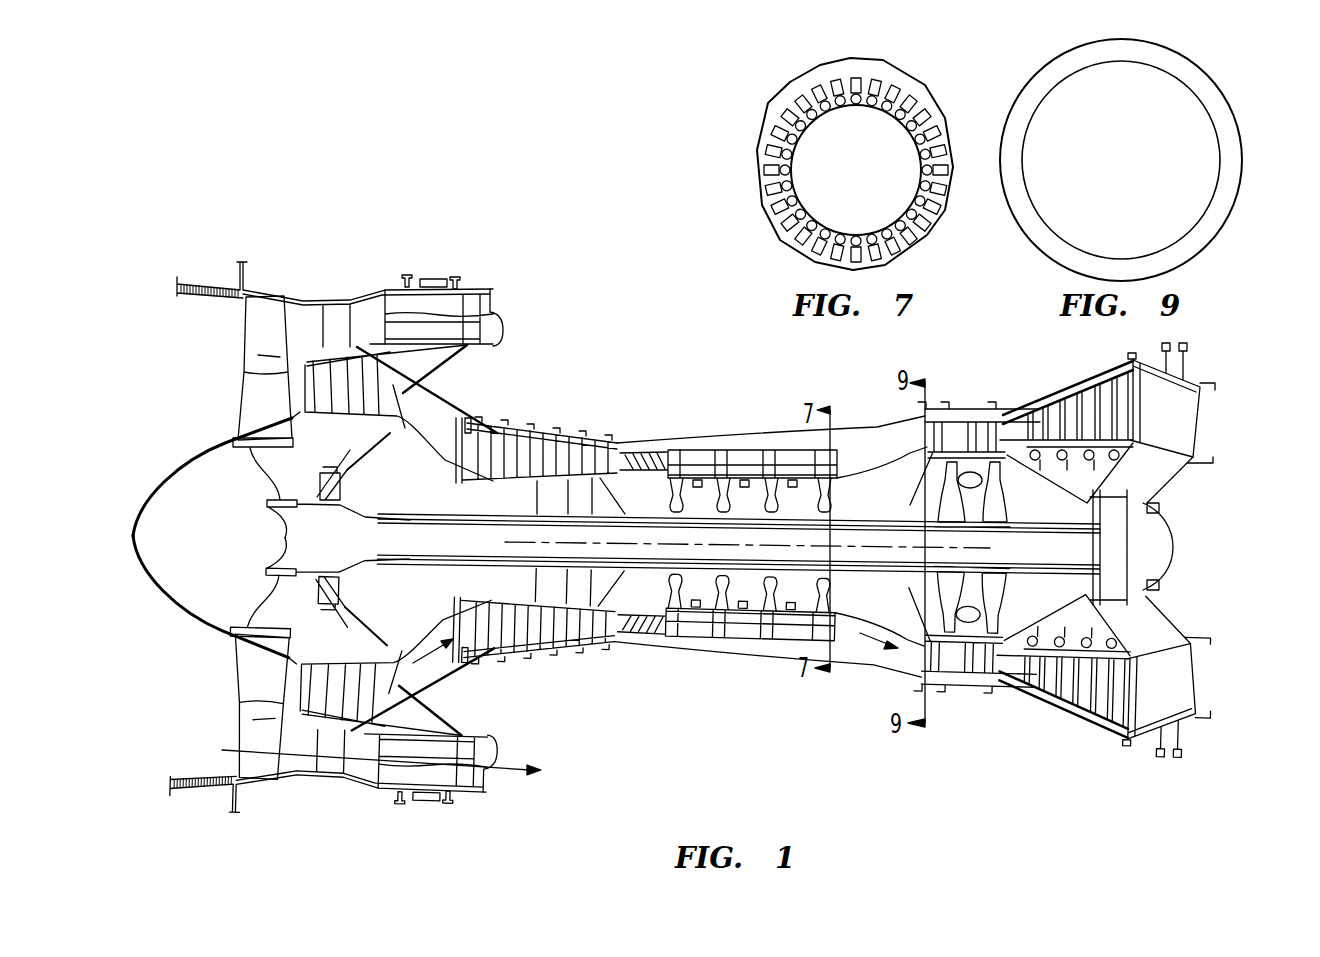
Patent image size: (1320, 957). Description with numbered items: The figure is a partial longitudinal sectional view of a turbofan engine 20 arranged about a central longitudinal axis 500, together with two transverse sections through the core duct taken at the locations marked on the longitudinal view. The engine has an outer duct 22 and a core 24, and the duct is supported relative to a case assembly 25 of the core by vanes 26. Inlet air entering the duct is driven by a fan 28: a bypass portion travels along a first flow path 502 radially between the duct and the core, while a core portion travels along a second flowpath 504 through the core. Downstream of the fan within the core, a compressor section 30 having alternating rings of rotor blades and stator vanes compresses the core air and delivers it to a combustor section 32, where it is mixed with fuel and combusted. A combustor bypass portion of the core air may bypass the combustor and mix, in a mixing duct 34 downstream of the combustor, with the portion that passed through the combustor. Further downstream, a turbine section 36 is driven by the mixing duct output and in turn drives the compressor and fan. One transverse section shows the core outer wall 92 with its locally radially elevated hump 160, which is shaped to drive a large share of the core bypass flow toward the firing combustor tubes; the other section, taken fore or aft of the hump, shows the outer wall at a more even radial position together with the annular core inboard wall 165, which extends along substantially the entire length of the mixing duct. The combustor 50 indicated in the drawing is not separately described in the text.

In FIG. 1, the turbofan engine 20 is at (580, 276).
In FIG. 1, the duct 22 is at (305, 293).
In FIG. 1, the core 24 is at (488, 394).
In FIG. 1, the case assembly 25 is at (467, 418).
In FIG. 1, the vanes 26 is at (333, 337).
In FIG. 1, the fan 28 is at (263, 763).
In FIG. 1, the compressor section 30 is at (500, 427).
In FIG. 1, the combustor section 32 is at (720, 662).
In FIG. 1, the mixing duct 34 is at (876, 424).
In FIG. 1, the turbine section 36 is at (1015, 680).
In FIG. 1, the combustor 50 is at (748, 458).
In FIG. 1, the central longitudinal axis 500 is at (925, 551).
In FIG. 1, the first flow path 502 is at (508, 773).
In FIG. 1, the second flowpath 504 is at (457, 660).
In FIG. 7, the hump 160 is at (890, 66).
In FIG. 9, the core outer wall 92 is at (1240, 110).
In FIG. 9, the core inboard wall 165 is at (1030, 190).